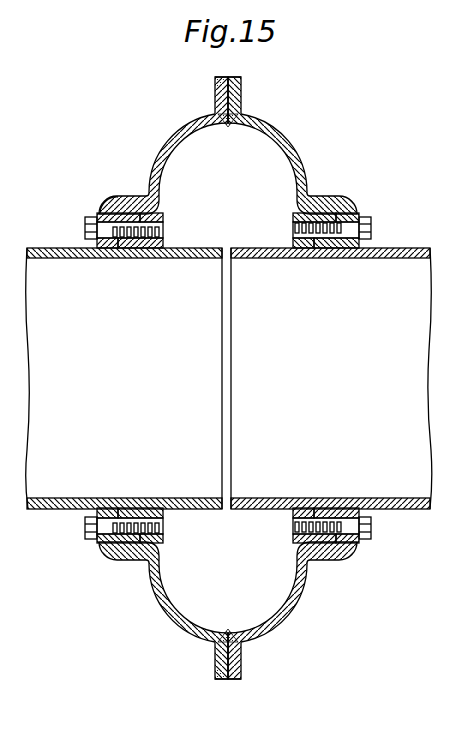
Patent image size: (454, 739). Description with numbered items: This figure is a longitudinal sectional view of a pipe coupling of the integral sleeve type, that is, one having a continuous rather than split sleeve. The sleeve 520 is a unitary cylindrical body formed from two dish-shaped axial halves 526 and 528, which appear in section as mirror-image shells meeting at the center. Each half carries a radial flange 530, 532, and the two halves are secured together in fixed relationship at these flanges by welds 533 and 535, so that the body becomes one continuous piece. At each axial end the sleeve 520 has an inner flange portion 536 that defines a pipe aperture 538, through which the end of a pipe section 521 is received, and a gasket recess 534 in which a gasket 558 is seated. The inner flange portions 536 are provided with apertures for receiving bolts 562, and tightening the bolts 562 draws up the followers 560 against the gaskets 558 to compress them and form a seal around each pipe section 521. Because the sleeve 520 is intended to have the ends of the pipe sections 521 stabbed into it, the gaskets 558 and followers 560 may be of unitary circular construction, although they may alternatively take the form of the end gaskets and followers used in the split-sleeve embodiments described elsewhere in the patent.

The sleeve 520 is at (228, 372).
The pipe sections 521 is at (38, 247).
The dish-shaped axial half 526 is at (158, 180).
The dish-shaped axial half 528 is at (293, 158).
The radial flange 530 is at (216, 102).
The radial flange 532 is at (243, 100).
The weld 533 is at (221, 84).
The gasket recess 534 is at (108, 204).
The weld 535 is at (228, 123).
The inner flange portion 536 is at (103, 250).
The pipe aperture 538 is at (113, 250).
The gasket 558 is at (126, 213).
The follower 560 is at (158, 215).
The bolt 562 is at (164, 230).